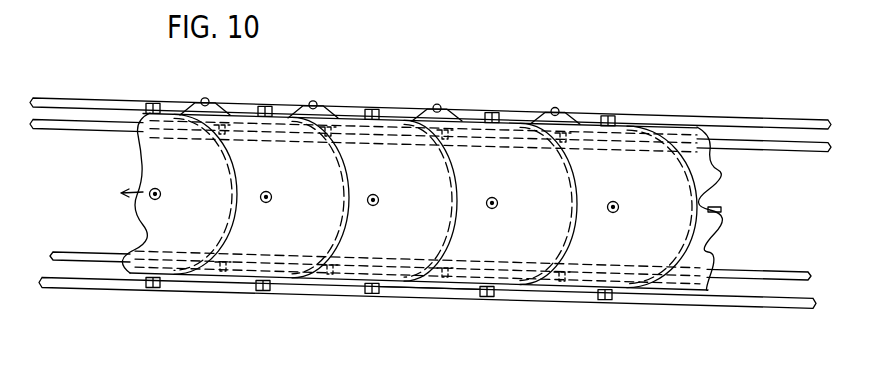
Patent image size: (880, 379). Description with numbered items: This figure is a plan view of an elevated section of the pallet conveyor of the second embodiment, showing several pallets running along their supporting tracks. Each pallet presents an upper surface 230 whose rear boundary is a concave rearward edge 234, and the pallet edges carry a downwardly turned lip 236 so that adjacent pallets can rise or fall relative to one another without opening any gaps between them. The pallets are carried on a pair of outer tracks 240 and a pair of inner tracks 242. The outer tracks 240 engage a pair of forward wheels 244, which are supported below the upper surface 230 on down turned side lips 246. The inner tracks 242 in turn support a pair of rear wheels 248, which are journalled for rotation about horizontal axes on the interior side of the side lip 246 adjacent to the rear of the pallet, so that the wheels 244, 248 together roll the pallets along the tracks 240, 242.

The upper surface 230 is at (655, 250).
The concave rearward edge 234 is at (384, 210).
The downwardly turned lip 236 is at (346, 177).
The outer track 240 is at (88, 99).
The inner track 242 is at (352, 113).
The forward wheel 244 is at (268, 101).
The down turned side lip 246 is at (462, 292).
The rear wheel 248 is at (452, 142).